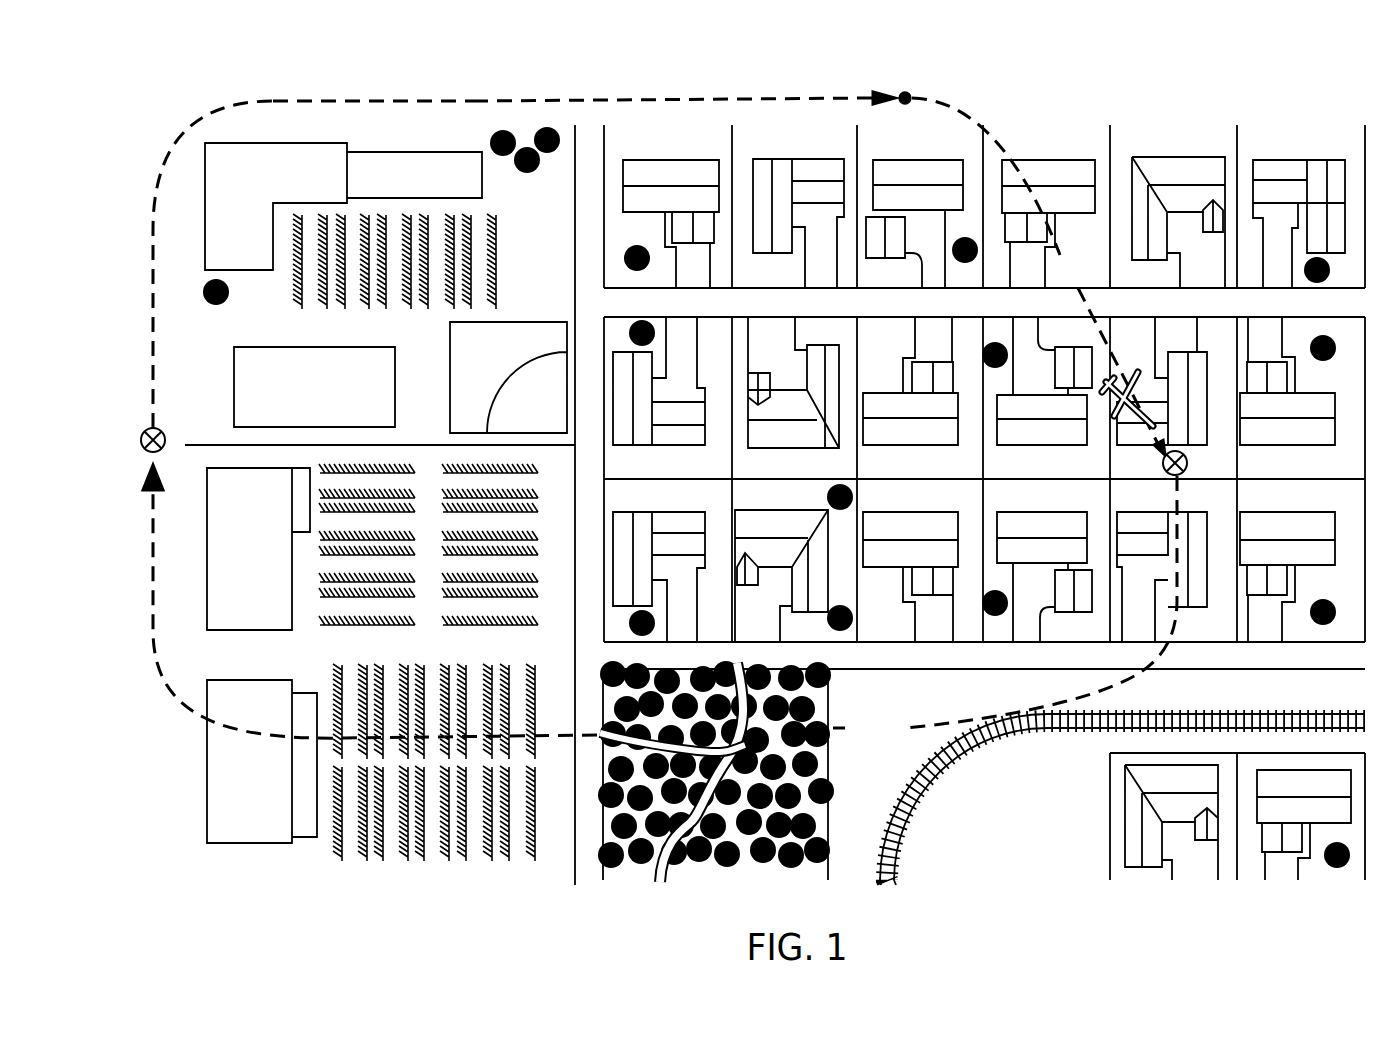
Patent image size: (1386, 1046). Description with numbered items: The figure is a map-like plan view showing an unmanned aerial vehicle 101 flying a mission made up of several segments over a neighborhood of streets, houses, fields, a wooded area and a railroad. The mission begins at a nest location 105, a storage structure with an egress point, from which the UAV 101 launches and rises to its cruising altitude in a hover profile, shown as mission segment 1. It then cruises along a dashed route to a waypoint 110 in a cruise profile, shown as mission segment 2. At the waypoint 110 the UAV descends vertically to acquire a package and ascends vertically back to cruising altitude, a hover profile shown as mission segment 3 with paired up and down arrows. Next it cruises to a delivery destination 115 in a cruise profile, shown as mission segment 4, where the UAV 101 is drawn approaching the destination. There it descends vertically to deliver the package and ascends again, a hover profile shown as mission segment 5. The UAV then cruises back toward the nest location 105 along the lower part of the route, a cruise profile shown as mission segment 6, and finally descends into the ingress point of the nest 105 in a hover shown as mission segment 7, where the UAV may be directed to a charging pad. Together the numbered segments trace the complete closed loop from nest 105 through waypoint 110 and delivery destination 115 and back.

The unmanned aerial vehicle 101 is at (1135, 373).
The nest location 105 is at (160, 433).
The waypoint 110 is at (905, 104).
The delivery destination 115 is at (1188, 458).
The mission segment 1 is at (135, 418).
The mission segment 2 is at (573, 101).
The mission segment 3 is at (897, 55).
The mission segment 4 is at (1110, 356).
The mission segment 5 is at (1202, 493).
The mission segment 6 is at (521, 617).
The mission segment 7 is at (135, 460).